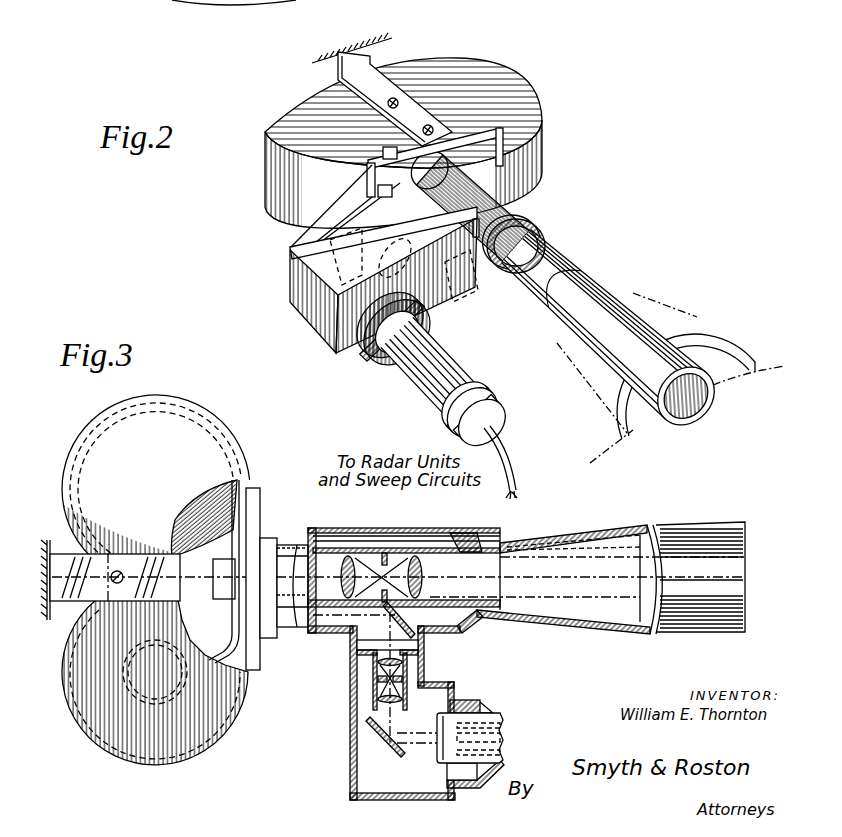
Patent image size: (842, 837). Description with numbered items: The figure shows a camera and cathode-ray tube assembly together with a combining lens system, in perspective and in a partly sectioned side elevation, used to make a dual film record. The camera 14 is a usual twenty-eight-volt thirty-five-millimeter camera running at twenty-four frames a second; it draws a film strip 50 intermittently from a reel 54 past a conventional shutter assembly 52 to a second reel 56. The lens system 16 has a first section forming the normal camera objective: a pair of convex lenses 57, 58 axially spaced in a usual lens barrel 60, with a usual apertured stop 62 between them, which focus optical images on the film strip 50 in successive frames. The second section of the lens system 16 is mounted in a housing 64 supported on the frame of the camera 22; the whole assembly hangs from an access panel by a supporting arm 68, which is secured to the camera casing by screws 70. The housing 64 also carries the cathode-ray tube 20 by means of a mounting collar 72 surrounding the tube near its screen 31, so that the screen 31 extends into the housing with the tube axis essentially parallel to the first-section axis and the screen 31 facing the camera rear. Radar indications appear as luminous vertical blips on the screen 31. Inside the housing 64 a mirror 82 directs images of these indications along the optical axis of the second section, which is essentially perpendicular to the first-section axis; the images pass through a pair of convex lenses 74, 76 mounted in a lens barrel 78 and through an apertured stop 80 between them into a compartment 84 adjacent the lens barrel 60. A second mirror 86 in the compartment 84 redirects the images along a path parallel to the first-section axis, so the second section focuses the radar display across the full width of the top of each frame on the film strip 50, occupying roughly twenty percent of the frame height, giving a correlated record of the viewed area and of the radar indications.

In FIG. 2, the camera 14 is at (300, 137).
In FIG. 3, the camera 14 is at (200, 452).
In FIG. 2, the lens system 16 is at (522, 207).
In FIG. 3, the lens system 16 is at (403, 530).
In FIG. 2, the cathode-ray tube 20 is at (420, 360).
In FIG. 3, the cathode-ray tube 20 is at (490, 722).
In FIG. 2, the frame of the camera 22 is at (507, 83).
In FIG. 3, the screen 31 is at (430, 726).
In FIG. 3, the film strip 50 is at (252, 530).
In FIG. 2, the shutter assembly 52 is at (497, 153).
In FIG. 3, the shutter assembly 52 is at (267, 540).
In FIG. 3, the reel 54 is at (240, 490).
In FIG. 3, the reel 56 is at (225, 720).
In FIG. 3, the convex lens 57 is at (425, 570).
In FIG. 3, the convex lens 58 is at (342, 558).
In FIG. 3, the lens barrel 60 is at (470, 541).
In FIG. 3, the apertured stop 62 is at (385, 553).
In FIG. 3, the housing 64 is at (426, 647).
In FIG. 2, the supporting arm 68 is at (370, 75).
In FIG. 2, the screws 70 is at (430, 128).
In FIG. 2, the mounting collar 72 is at (352, 358).
In FIG. 3, the mounting collar 72 is at (462, 700).
In FIG. 3, the convex lens 74 is at (378, 668).
In FIG. 3, the convex lens 76 is at (372, 710).
In FIG. 2, the lens barrel 78 is at (333, 228).
In FIG. 3, the lens barrel 78 is at (373, 693).
In FIG. 3, the apertured stop 80 is at (402, 678).
In FIG. 2, the mirror 82 is at (302, 272).
In FIG. 3, the mirror 82 is at (373, 735).
In FIG. 3, the compartment 84 is at (377, 617).
In FIG. 2, the second mirror 86 is at (470, 283).
In FIG. 3, the second mirror 86 is at (388, 627).